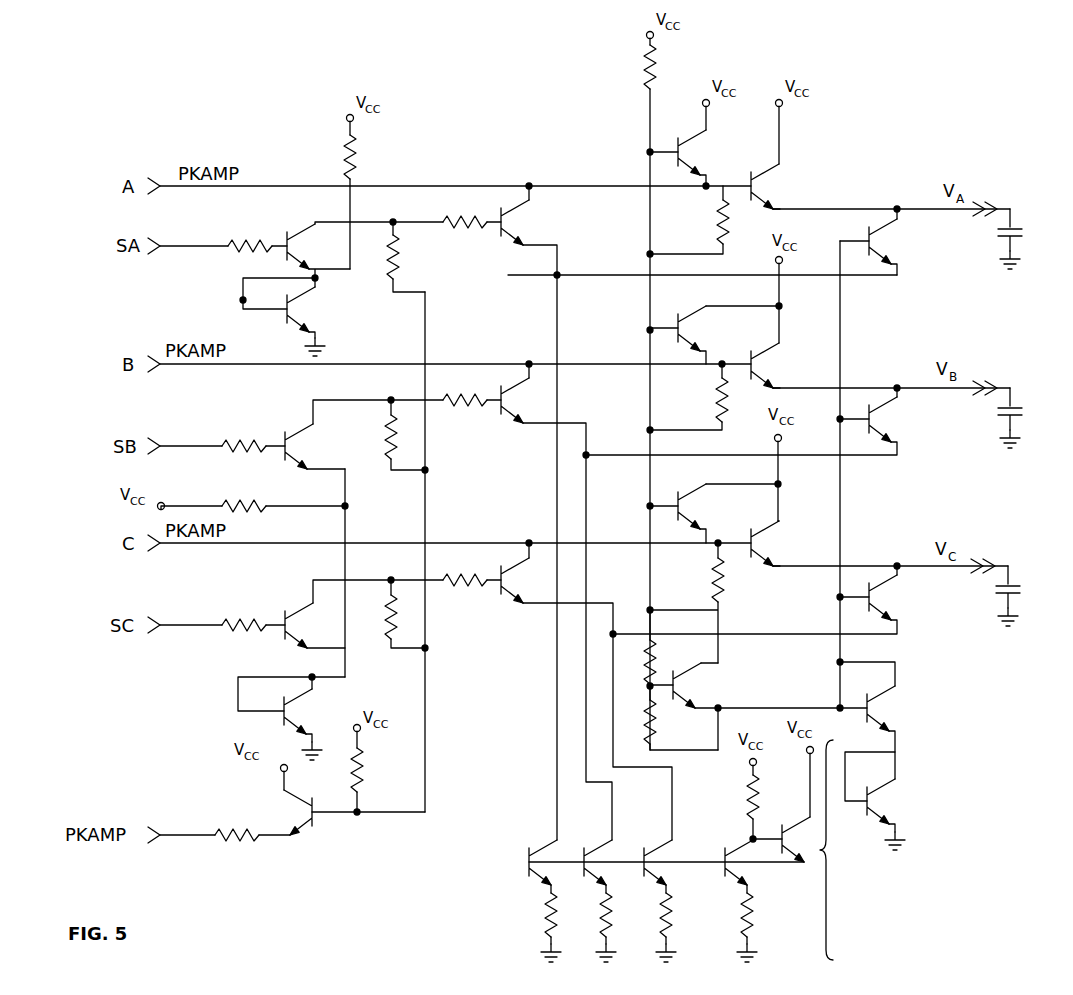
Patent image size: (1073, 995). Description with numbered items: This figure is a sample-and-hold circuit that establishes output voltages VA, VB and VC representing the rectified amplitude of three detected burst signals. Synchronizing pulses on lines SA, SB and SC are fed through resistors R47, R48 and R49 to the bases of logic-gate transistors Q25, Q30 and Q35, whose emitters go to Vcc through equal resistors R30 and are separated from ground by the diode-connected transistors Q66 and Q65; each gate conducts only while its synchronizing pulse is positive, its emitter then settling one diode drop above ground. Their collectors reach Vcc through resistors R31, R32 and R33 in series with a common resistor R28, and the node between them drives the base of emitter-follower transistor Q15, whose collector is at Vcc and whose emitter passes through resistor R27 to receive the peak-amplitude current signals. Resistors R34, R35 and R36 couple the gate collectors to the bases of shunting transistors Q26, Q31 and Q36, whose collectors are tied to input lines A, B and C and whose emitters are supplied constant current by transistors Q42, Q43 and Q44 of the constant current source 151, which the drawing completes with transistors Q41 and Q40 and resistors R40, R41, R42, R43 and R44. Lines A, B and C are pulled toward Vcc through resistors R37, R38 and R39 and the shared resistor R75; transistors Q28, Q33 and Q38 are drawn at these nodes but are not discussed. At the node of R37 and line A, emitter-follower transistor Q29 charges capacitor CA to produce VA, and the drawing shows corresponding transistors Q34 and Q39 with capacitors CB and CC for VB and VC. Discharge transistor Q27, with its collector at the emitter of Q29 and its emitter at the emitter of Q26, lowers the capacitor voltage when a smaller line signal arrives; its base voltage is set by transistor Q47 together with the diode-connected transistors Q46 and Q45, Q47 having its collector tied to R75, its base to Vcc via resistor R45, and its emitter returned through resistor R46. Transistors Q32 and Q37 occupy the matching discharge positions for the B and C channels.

The transistor Q25 is at (290, 228).
The diode-connected transistor Q66 is at (296, 309).
The transistor Q26 is at (518, 220).
The transistor Q28 is at (695, 151).
The emitter-follower transistor Q29 is at (766, 188).
The transistor Q27 is at (887, 241).
The transistor Q30 is at (304, 448).
The transistor Q31 is at (518, 399).
The transistor Q33 is at (695, 328).
The transistor Q34 is at (766, 368).
The transistor Q32 is at (887, 419).
The transistor Q35 is at (290, 612).
The transistor Q36 is at (518, 579).
The transistor Q38 is at (695, 506).
The transistor Q39 is at (766, 546).
The transistor Q37 is at (887, 597).
The diode-connected transistor Q65 is at (288, 713).
The emitter-follower transistor Q15 is at (314, 822).
The transistor Q47 is at (690, 686).
The diode-connected transistor Q46 is at (880, 706).
The diode-connected transistor Q45 is at (880, 801).
The transistor Q42 is at (526, 852).
The transistor Q43 is at (572, 852).
The transistor Q44 is at (632, 852).
The transistor Q41 is at (712, 857).
The transistor Q40 is at (776, 826).
The resistor R30 is at (353, 152).
The resistor R47 is at (261, 243).
The resistor R31 is at (396, 252).
The resistor R34 is at (448, 219).
The resistor R75 is at (646, 68).
The resistor R37 is at (722, 222).
The resistor R48 is at (248, 441).
The resistor R32 is at (382, 430).
The resistor R35 is at (474, 397).
The resistor R38 is at (722, 407).
The resistor R49 is at (232, 636).
The resistor R33 is at (398, 627).
The resistor R36 is at (472, 577).
The resistor R39 is at (715, 588).
The resistor R27 is at (226, 844).
The resistor R28 is at (359, 780).
The resistor R45 is at (652, 647).
The resistor R46 is at (652, 729).
The resistor R40 is at (747, 800).
The resistor R41 is at (740, 922).
The resistor R42 is at (544, 918).
The resistor R43 is at (589, 923).
The resistor R44 is at (648, 923).
The capacitor CA is at (1026, 239).
The capacitor CB is at (1023, 418).
The capacitor CC is at (1020, 596).
The constant current source 151 is at (846, 850).